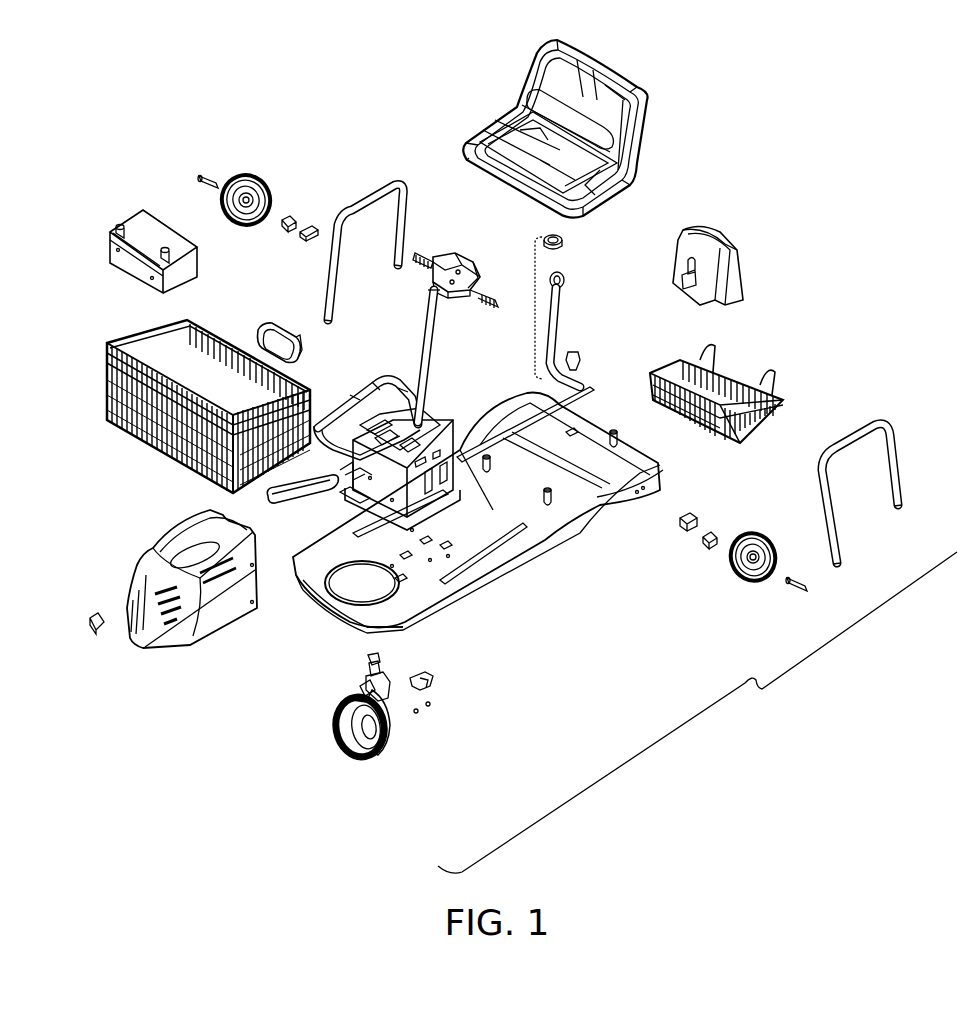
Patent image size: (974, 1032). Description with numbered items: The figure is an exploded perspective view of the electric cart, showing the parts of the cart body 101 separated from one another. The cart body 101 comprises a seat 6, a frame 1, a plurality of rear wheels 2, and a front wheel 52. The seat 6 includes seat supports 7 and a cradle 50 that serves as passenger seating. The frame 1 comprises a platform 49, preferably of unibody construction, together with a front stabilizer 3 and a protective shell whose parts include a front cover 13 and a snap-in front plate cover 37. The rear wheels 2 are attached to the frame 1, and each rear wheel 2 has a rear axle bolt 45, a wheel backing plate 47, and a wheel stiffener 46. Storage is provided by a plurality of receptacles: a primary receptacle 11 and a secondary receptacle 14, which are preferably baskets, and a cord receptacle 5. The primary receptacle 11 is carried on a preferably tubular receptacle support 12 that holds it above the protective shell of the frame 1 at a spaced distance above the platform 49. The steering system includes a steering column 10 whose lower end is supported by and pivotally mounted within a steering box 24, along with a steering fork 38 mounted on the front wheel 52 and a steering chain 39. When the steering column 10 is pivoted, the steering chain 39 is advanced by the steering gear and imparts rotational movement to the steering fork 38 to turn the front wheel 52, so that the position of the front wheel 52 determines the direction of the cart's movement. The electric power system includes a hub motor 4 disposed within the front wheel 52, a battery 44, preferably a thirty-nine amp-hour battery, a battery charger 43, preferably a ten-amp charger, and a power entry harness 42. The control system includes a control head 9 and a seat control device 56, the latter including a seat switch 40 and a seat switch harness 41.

The frame 1 is at (525, 563).
The rear wheels 2 is at (252, 175).
The front stabilizer 3 is at (435, 680).
The hub motor 4 is at (377, 753).
The cord receptacle 5 is at (712, 232).
The seat 6 is at (510, 113).
The seat supports 7 is at (368, 195).
The control head 9 is at (453, 257).
The steering column 10 is at (437, 358).
The primary receptacle 11 is at (115, 435).
The receptacle support 12 is at (350, 380).
The front cover 13 is at (220, 635).
The secondary receptacle 14 is at (735, 365).
The steering box 24 is at (360, 495).
The snap-in front plate cover 37 is at (93, 640).
The steering fork 38 is at (360, 680).
The steering chain 39 is at (262, 512).
The seat switch 40 is at (567, 243).
The seat switch harness 41 is at (563, 308).
The power entry harness 42 is at (585, 362).
The battery charger 43 is at (268, 318).
The battery 44 is at (110, 258).
The rear axle bolt 45 is at (203, 168).
The wheel stiffener 46 is at (290, 212).
The wheel backing plate 47 is at (312, 226).
The platform 49 is at (420, 607).
The cradle 50 is at (607, 100).
The front wheel 52 is at (347, 757).
The seat control device 56 is at (532, 307).
The cart body 101 is at (697, 712).